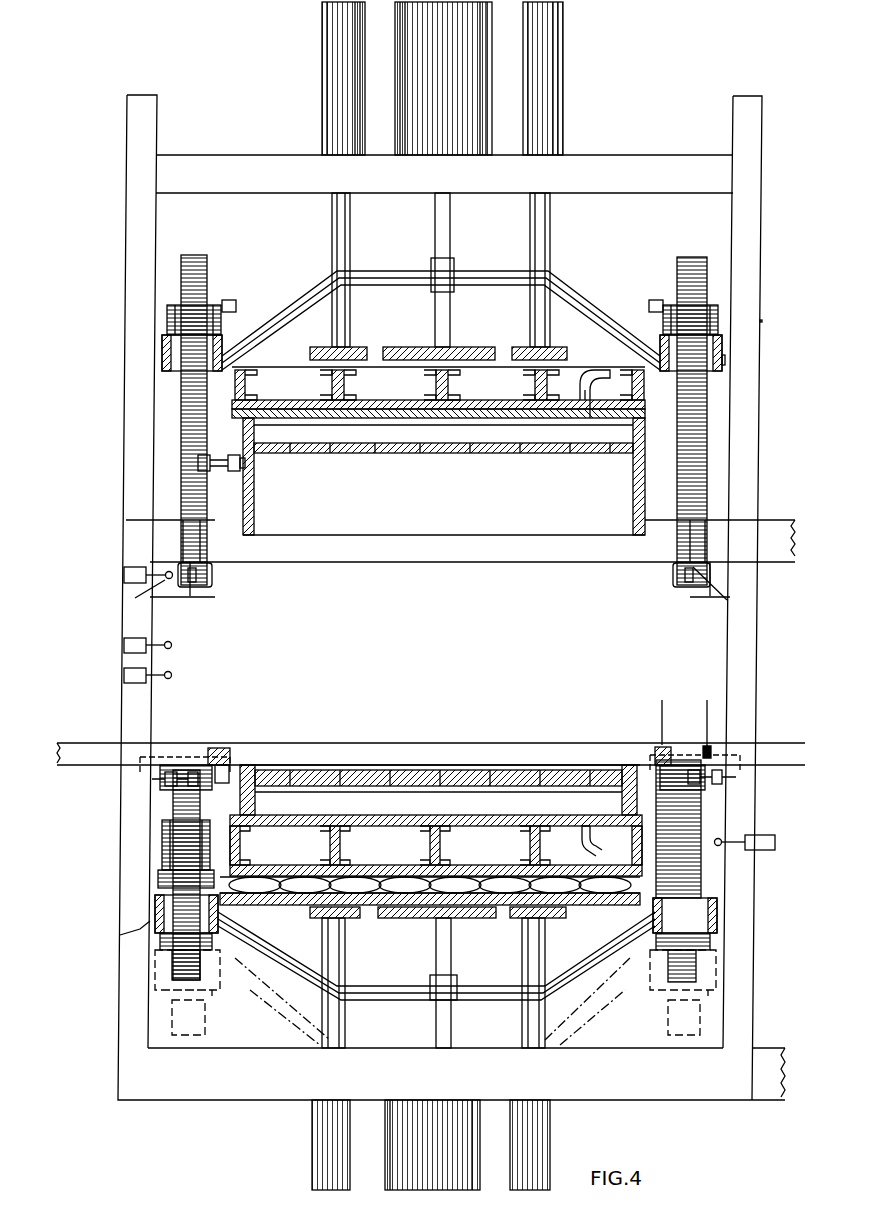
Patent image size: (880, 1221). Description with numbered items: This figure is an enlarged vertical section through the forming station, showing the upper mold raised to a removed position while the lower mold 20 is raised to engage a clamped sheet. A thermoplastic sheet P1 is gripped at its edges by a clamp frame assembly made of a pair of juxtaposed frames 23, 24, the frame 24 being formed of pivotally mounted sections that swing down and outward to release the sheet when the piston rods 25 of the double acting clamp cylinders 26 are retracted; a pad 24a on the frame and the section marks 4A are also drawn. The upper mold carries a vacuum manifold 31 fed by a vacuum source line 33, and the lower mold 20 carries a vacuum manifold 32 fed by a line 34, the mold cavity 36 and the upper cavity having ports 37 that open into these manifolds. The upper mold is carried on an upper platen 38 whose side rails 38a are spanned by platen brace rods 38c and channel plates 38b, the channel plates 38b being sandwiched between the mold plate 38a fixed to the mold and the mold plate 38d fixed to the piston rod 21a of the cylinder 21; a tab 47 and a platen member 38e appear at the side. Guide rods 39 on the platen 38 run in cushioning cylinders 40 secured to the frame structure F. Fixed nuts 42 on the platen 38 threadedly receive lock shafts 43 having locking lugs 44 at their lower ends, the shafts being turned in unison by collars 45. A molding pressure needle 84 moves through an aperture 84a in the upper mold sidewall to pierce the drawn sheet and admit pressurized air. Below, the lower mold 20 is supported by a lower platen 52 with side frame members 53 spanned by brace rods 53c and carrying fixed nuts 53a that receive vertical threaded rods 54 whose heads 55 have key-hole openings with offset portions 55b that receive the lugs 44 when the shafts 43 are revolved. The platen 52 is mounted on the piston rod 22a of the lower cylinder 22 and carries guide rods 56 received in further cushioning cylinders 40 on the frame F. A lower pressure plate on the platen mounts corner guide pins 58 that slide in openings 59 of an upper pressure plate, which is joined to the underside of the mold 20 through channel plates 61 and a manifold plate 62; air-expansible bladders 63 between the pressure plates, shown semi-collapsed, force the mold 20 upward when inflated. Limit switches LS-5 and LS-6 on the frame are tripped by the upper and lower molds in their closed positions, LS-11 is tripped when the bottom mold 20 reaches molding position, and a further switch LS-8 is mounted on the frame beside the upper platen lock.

The frame structure F is at (626, 162).
The cylinder 21 is at (441, 79).
The lower fluid pressure operated cylinder 22 is at (408, 1151).
The cushioning cylinders 40 is at (323, 118).
The guide rods 39 is at (330, 230).
The piston rod 21a is at (450, 233).
The platen brace rods 38c is at (579, 282).
The lock shafts 43 is at (742, 265).
The collars 45 is at (167, 317).
The fixed nuts 42 is at (162, 337).
The tab 47 is at (234, 302).
The upper platen 38 is at (738, 335).
The platen member 38e is at (725, 360).
The mold plate 38d is at (462, 360).
The channel plates 38b is at (330, 386).
The mold plate 38a is at (365, 404).
The vacuum source line 33 is at (599, 376).
The vacuum manifold 31 is at (543, 446).
The ports 37 is at (438, 454).
The molding pressure needle 84 is at (222, 454).
The aperture 84a is at (246, 481).
The locking lugs 44 is at (670, 583).
The limit switch LS-8 is at (124, 574).
The top platen extend limit switch LS-5 is at (124, 642).
The bottom platen extend limit switch LS-6 is at (124, 680).
The bottom platen extend limit switch LS-11 is at (775, 845).
The vacuum manifold 32 is at (408, 763).
The mold cavity 36 is at (330, 770).
The lower mold 20 is at (256, 791).
The piston rods 25 is at (632, 796).
The thermoplastic sheet P1 is at (468, 783).
The manifold plate 62 is at (493, 819).
The offset portions 55b is at (244, 845).
The channel plates 61 is at (347, 846).
The air-expansible bladders 63 is at (478, 865).
The vacuum source line 34 is at (594, 848).
The openings 59 is at (648, 863).
The piston rod 22a is at (451, 956).
The guide rods 56 is at (346, 957).
The brace rods 53c is at (276, 980).
The threaded rods 54 is at (157, 838).
The heads 55 is at (159, 798).
The clamp cylinders 26 is at (170, 770).
The pad 24a is at (214, 747).
The frame 24 is at (226, 763).
The frame 23 is at (667, 743).
The section line 4A is at (683, 729).
The fixed nuts 53a is at (150, 877).
The vertical guide rods or pins 58 is at (632, 903).
The side frame members 53 is at (152, 944).
The lower platen 52 is at (115, 932).